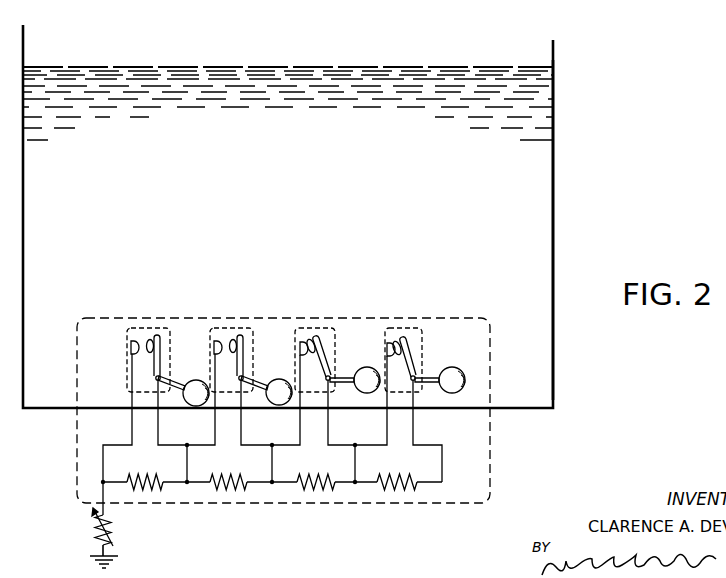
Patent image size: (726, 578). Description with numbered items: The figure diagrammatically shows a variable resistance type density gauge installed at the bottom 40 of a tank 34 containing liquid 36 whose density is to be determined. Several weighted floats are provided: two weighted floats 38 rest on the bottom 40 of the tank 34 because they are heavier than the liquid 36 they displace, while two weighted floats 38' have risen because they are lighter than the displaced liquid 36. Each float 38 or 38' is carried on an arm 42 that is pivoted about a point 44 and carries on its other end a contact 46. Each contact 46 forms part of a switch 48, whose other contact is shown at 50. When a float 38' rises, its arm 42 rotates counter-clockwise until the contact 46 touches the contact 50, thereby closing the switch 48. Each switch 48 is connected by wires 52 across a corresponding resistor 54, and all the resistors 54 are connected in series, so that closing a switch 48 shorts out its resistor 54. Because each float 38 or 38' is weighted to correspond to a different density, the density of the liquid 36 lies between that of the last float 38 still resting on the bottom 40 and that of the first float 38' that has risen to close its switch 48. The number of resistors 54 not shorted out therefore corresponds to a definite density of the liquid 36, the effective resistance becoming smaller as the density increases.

The tank 34 is at (555, 148).
The liquid 36 is at (128, 83).
The weighted float 38 is at (232, 408).
The weighted float (risen) 38' is at (403, 402).
The bottom 40 is at (540, 410).
The arm 42 is at (162, 348).
The pivot point 44 is at (441, 362).
The contact 46 is at (152, 338).
The switch 48 is at (161, 327).
The contact 50 is at (132, 344).
The wires 52 is at (158, 432).
The resistor 54 is at (140, 491).